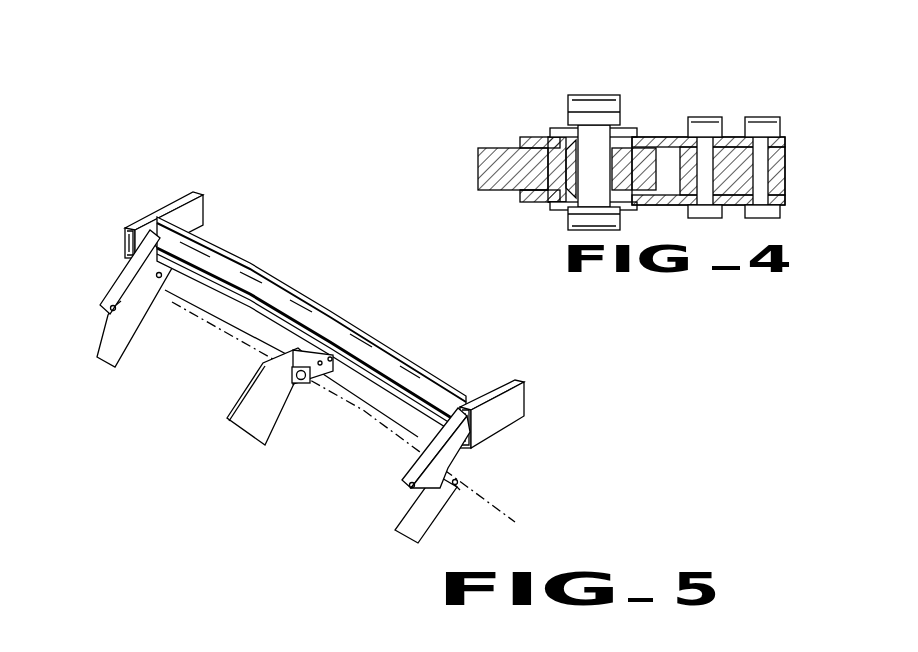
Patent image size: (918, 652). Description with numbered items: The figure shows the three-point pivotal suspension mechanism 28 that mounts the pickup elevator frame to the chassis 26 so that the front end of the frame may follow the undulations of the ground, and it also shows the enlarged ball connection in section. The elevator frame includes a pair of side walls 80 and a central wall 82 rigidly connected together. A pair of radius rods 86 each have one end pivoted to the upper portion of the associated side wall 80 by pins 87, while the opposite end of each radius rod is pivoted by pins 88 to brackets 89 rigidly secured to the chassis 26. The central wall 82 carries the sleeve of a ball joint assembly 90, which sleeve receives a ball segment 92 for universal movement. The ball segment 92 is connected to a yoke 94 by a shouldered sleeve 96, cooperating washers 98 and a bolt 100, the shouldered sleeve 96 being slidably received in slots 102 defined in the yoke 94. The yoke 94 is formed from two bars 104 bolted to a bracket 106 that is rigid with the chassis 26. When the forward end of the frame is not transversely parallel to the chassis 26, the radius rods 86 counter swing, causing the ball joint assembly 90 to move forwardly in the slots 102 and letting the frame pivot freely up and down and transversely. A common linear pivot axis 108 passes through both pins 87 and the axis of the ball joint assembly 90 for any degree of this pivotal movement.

In FIG. 5, the chassis 26 is at (183, 195).
In FIG. 4, the three-point pivotal suspension mechanism 28 is at (735, 75).
In FIG. 5, the three-point pivotal suspension mechanism 28 is at (470, 457).
In FIG. 5, the side walls 80 is at (110, 355).
In FIG. 4, the central wall 82 is at (478, 168).
In FIG. 5, the central wall 82 is at (245, 425).
In FIG. 5, the radius rods 86 is at (118, 304).
In FIG. 5, the pins 87 is at (159, 278).
In FIG. 5, the pins 88 is at (115, 311).
In FIG. 4, the brackets 89 is at (546, 150).
In FIG. 5, the brackets 89 is at (120, 272).
In FIG. 4, the ball joint assembly 90 is at (640, 160).
In FIG. 5, the ball joint assembly 90 is at (300, 388).
In FIG. 4, the ball segment 92 is at (548, 196).
In FIG. 4, the yoke 94 is at (735, 137).
In FIG. 5, the yoke 94 is at (330, 365).
In FIG. 4, the shouldered sleeve 96 is at (562, 206).
In FIG. 4, the washers 98 is at (628, 128).
In FIG. 4, the bolt 100 is at (600, 95).
In FIG. 5, the bolt 100 is at (304, 380).
In FIG. 4, the slots 102 is at (570, 145).
In FIG. 4, the bars 104 is at (786, 141).
In FIG. 4, the bracket 106 is at (786, 170).
In FIG. 5, the bracket 106 is at (325, 325).
In FIG. 5, the common linear pivot axis 108 is at (397, 442).